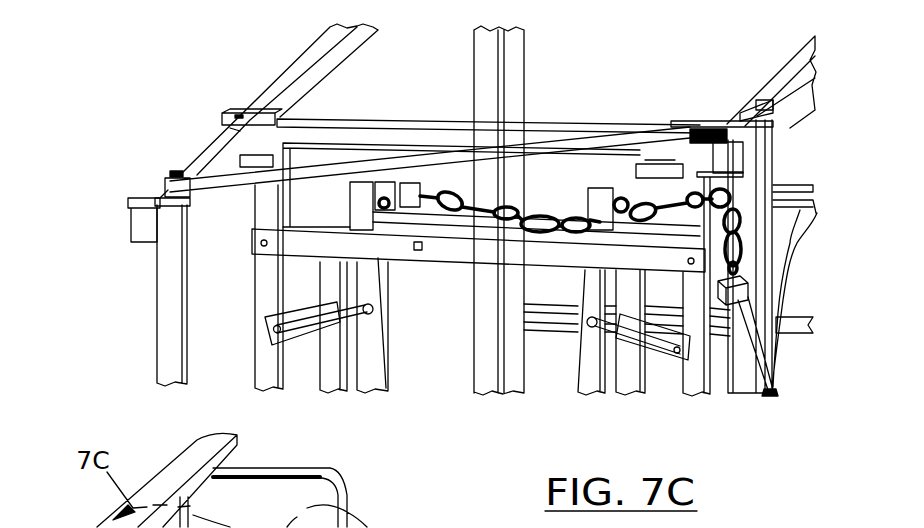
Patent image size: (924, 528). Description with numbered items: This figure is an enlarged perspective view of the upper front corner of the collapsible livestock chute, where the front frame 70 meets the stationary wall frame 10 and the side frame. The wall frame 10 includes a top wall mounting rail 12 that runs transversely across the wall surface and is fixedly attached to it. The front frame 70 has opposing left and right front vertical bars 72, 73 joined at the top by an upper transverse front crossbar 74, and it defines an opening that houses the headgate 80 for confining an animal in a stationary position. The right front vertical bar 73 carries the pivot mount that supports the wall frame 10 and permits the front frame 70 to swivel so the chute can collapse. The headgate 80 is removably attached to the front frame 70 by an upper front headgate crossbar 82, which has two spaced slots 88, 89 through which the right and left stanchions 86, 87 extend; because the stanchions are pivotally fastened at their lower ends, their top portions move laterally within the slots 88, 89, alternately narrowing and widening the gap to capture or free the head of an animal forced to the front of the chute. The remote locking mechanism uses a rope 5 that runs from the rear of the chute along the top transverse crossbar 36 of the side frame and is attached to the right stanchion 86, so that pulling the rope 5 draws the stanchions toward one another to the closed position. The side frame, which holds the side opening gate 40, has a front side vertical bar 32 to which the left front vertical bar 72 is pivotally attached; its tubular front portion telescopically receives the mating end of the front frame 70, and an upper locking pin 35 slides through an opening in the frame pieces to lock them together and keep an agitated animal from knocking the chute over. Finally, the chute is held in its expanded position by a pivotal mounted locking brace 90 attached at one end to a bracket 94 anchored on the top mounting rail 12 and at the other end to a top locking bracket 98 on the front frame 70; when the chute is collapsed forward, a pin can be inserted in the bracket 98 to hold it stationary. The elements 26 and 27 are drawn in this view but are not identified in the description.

The rope 5 is at (796, 58).
The wall frame 10 is at (173, 253).
The top wall mounting rail 12 is at (270, 84).
The base foot 26 is at (771, 394).
The hanging chain link 27 is at (743, 260).
The front side vertical bar 32 is at (785, 334).
The upper locking pin 35 is at (748, 111).
The top transverse crossbar 36 is at (775, 102).
The side opening gate 40 is at (799, 250).
The front frame 70 is at (448, 142).
The left front vertical bar 72 is at (695, 363).
The right front vertical bar 73 is at (260, 281).
The upper transverse front crossbar 74 is at (328, 137).
The headgate 80 is at (393, 250).
The upper front headgate crossbar 82 is at (507, 253).
The right stanchion 86 is at (374, 380).
The left stanchion 87 is at (588, 380).
The slot 88 is at (553, 243).
The slot 89 is at (418, 250).
The pivotal mounted locking brace 90 is at (398, 184).
The bracket 94 is at (130, 203).
The top locking bracket 98 is at (755, 133).